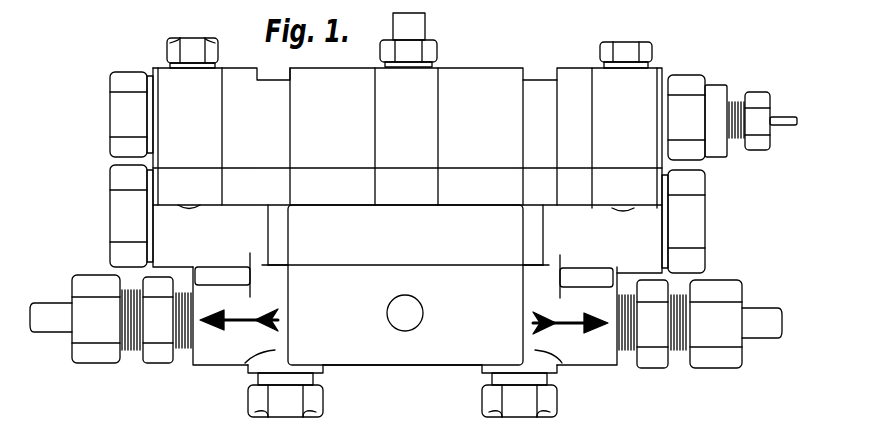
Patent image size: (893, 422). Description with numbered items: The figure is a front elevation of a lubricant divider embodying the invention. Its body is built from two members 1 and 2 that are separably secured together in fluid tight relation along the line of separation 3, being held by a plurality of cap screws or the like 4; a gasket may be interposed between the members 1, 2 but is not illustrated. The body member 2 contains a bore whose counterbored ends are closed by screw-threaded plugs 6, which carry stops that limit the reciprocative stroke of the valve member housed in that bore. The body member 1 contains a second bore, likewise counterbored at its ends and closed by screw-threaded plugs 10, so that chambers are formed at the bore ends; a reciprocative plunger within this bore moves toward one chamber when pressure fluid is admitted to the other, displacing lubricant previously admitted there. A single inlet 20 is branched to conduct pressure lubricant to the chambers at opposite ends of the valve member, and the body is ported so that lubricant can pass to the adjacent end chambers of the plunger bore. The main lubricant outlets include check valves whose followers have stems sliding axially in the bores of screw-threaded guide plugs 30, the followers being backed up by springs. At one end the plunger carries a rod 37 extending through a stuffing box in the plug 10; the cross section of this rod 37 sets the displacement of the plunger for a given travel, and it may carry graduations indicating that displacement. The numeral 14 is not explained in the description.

The body member 1 is at (492, 50).
The body member 2 is at (413, 353).
The line of separation 3 is at (335, 168).
The cap screws 4 is at (167, 50).
The screw-threaded plugs 6 is at (112, 213).
The screw-threaded plugs 10 is at (112, 110).
The adjusting nut 14 is at (425, 52).
The inlet 20 is at (393, 29).
The screw-threaded guide plugs 30 is at (250, 400).
The rod 37 is at (786, 128).